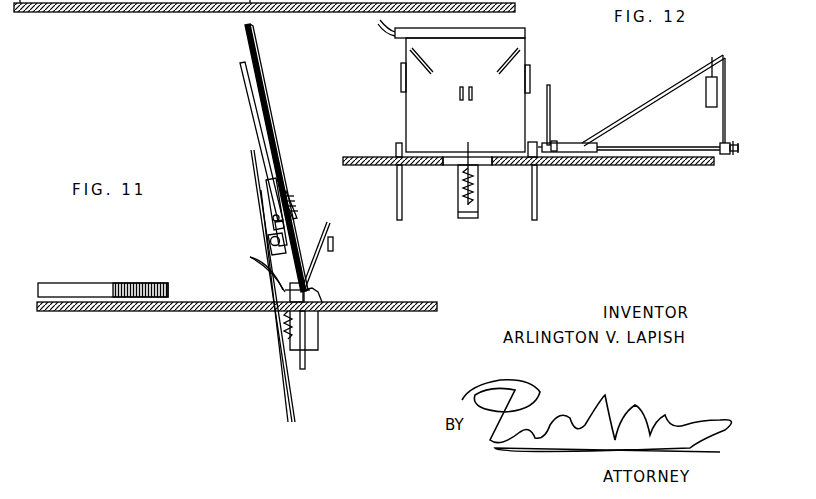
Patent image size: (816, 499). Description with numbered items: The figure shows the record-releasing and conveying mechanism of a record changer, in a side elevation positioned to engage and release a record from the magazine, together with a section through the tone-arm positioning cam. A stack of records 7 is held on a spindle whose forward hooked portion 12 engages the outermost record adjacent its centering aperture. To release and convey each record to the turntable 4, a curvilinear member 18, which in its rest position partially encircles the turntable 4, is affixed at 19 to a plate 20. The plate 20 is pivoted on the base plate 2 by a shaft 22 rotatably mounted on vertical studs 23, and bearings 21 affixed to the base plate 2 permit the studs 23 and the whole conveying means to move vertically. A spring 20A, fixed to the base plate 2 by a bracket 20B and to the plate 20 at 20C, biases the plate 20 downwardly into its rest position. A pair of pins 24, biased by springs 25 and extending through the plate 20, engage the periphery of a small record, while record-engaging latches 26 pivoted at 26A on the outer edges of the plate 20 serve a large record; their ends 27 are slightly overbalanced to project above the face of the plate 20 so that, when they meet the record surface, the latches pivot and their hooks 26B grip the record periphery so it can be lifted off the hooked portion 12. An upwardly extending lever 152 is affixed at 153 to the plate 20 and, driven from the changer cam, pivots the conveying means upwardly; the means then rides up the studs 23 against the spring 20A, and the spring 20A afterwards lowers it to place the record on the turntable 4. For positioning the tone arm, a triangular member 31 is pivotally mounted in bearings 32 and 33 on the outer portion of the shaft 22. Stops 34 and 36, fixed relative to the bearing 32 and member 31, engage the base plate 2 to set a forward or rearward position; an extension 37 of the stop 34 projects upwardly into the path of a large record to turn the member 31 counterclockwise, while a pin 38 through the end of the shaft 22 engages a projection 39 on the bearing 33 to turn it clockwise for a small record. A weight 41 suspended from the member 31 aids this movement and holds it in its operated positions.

In FIG. 12, the base plate 2 is at (358, 156).
In FIG. 11, the base plate 2 is at (430, 302).
In FIG. 11, the turntable 4 is at (144, 284).
In FIG. 11, the records 7 is at (277, 135).
In FIG. 11, the hooked portion 12 is at (250, 158).
In FIG. 12, the curvilinear member 18 is at (380, 24).
In FIG. 11, the curvilinear member 18 is at (250, 118).
In FIG. 12, the affixing point 19 is at (525, 33).
In FIG. 11, the affixing point 19 is at (284, 168).
In FIG. 12, the plate 20 is at (406, 104).
In FIG. 11, the plate 20 is at (268, 191).
In FIG. 12, the spring 20A is at (458, 190).
In FIG. 11, the spring 20A is at (290, 322).
In FIG. 12, the bracket 20B is at (478, 216).
In FIG. 11, the bracket 20B is at (318, 350).
In FIG. 12, the spring attachment point 20C is at (482, 130).
In FIG. 11, the spring attachment point 20C is at (293, 284).
In FIG. 12, the bearings 21 is at (404, 168).
In FIG. 11, the bearings 21 is at (318, 318).
In FIG. 12, the shaft 22 is at (398, 143).
In FIG. 11, the shaft 22 is at (310, 287).
In FIG. 12, the vertical studs 23 is at (397, 190).
In FIG. 11, the vertical studs 23 is at (306, 368).
In FIG. 12, the pins 24 is at (498, 53).
In FIG. 11, the pins 24 is at (288, 193).
In FIG. 12, the springs 25 is at (496, 70).
In FIG. 11, the springs 25 is at (272, 212).
In FIG. 12, the record-engaging latches 26 is at (401, 80).
In FIG. 11, the record-engaging latches 26 is at (279, 226).
In FIG. 12, the latch pivot 26A is at (401, 68).
In FIG. 11, the latch pivot 26A is at (273, 219).
In FIG. 11, the hooks 26B is at (292, 226).
In FIG. 11, the latch ends 27 is at (292, 210).
In FIG. 12, the triangular member 31 is at (665, 90).
In FIG. 11, the triangular member 31 is at (330, 232).
In FIG. 12, the bearing 32 is at (562, 143).
In FIG. 12, the bearing 33 is at (720, 145).
In FIG. 11, the bearing 33 is at (312, 286).
In FIG. 12, the stop 34 is at (553, 141).
In FIG. 11, the stop 34 is at (287, 302).
In FIG. 12, the stop 36 is at (572, 165).
In FIG. 11, the stop 36 is at (320, 292).
In FIG. 12, the extension 37 is at (550, 96).
In FIG. 11, the extension 37 is at (252, 260).
In FIG. 12, the pin 38 is at (734, 142).
In FIG. 12, the projection 39 is at (725, 154).
In FIG. 12, the weight 41 is at (706, 98).
In FIG. 11, the weight 41 is at (333, 246).
In FIG. 11, the lever 152 is at (279, 366).
In FIG. 11, the lever attachment point 153 is at (282, 241).